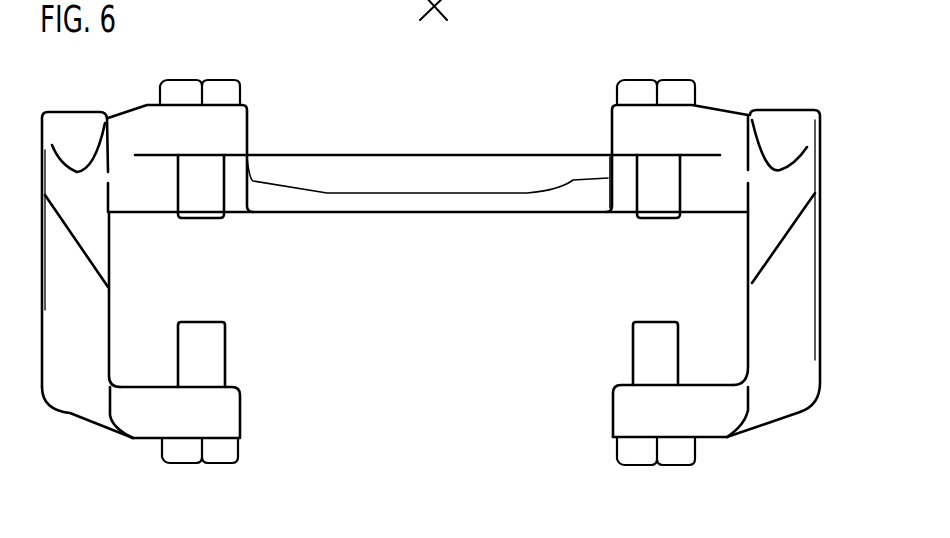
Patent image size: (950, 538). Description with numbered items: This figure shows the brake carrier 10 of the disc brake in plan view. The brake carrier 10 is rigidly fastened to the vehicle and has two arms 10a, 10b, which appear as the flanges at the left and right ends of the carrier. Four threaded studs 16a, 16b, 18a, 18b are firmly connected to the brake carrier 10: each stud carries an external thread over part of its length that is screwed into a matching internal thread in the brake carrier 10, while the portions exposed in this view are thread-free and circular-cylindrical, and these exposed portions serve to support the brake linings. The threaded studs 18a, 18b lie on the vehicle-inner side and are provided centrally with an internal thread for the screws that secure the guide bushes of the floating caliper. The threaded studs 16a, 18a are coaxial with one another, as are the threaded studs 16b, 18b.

The brake carrier 10 is at (398, 170).
The arm of the brake carrier 10a is at (77, 385).
The arm of the brake carrier 10b is at (773, 287).
The threaded stud 16a is at (223, 452).
The threaded stud 16b is at (635, 452).
The threaded stud 18a is at (222, 95).
The threaded stud 18b is at (640, 92).